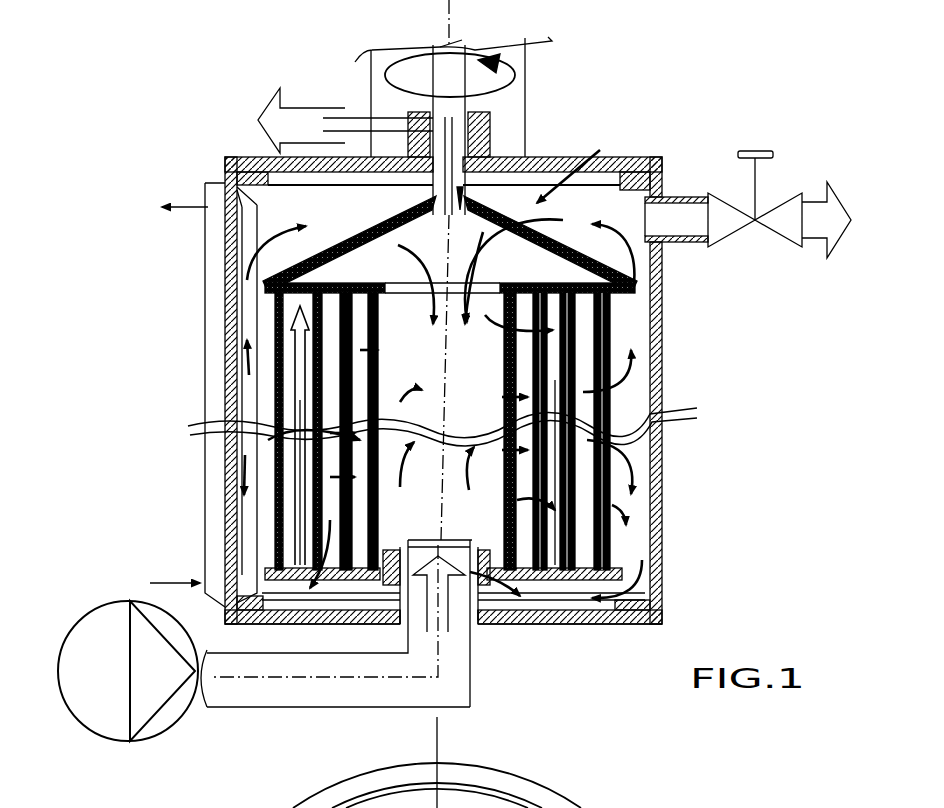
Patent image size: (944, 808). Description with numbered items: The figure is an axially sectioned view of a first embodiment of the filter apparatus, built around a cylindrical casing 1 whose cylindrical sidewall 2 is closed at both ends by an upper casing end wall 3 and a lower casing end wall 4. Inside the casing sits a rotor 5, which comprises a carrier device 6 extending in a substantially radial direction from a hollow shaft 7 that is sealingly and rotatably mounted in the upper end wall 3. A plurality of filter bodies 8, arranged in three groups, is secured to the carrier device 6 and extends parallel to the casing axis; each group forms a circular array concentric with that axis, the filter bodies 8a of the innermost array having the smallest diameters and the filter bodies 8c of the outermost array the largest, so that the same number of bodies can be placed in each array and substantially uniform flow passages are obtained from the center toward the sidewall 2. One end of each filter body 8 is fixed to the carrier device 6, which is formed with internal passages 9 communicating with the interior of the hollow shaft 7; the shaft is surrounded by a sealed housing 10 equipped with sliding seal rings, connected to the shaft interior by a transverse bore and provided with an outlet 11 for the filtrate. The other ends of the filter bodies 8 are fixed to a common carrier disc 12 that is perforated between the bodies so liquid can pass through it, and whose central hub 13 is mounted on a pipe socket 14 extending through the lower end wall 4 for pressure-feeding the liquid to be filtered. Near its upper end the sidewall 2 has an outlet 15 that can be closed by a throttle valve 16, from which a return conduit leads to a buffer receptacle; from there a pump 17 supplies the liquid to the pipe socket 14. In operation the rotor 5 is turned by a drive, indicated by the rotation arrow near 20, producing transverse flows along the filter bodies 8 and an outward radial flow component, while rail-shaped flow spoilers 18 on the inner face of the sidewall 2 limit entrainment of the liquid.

The cylindrical casing 1 is at (185, 325).
The cylindrical sidewall 2 is at (663, 350).
The upper casing end wall 3 is at (625, 165).
The lower casing end wall 4 is at (598, 628).
The rotor 5 is at (578, 167).
The carrier device 6 is at (545, 223).
The hollow shaft 7 is at (497, 71).
The filter bodies 8 is at (267, 470).
The filter bodies of the innermost circular array 8a is at (322, 532).
The filter bodies of the outermost circular array 8c is at (283, 541).
The internal passages 9 is at (303, 275).
The sealed housing 10 is at (486, 136).
The outlet 11 is at (340, 108).
The common carrier disc 12 is at (552, 592).
The hub 13 is at (488, 624).
The pipe socket 14 is at (448, 558).
The outlet 15 is at (684, 197).
The throttle valve 16 is at (727, 231).
The pump 17 is at (115, 700).
The flow spoilers 18 is at (240, 377).
The drive 20 is at (460, 38).